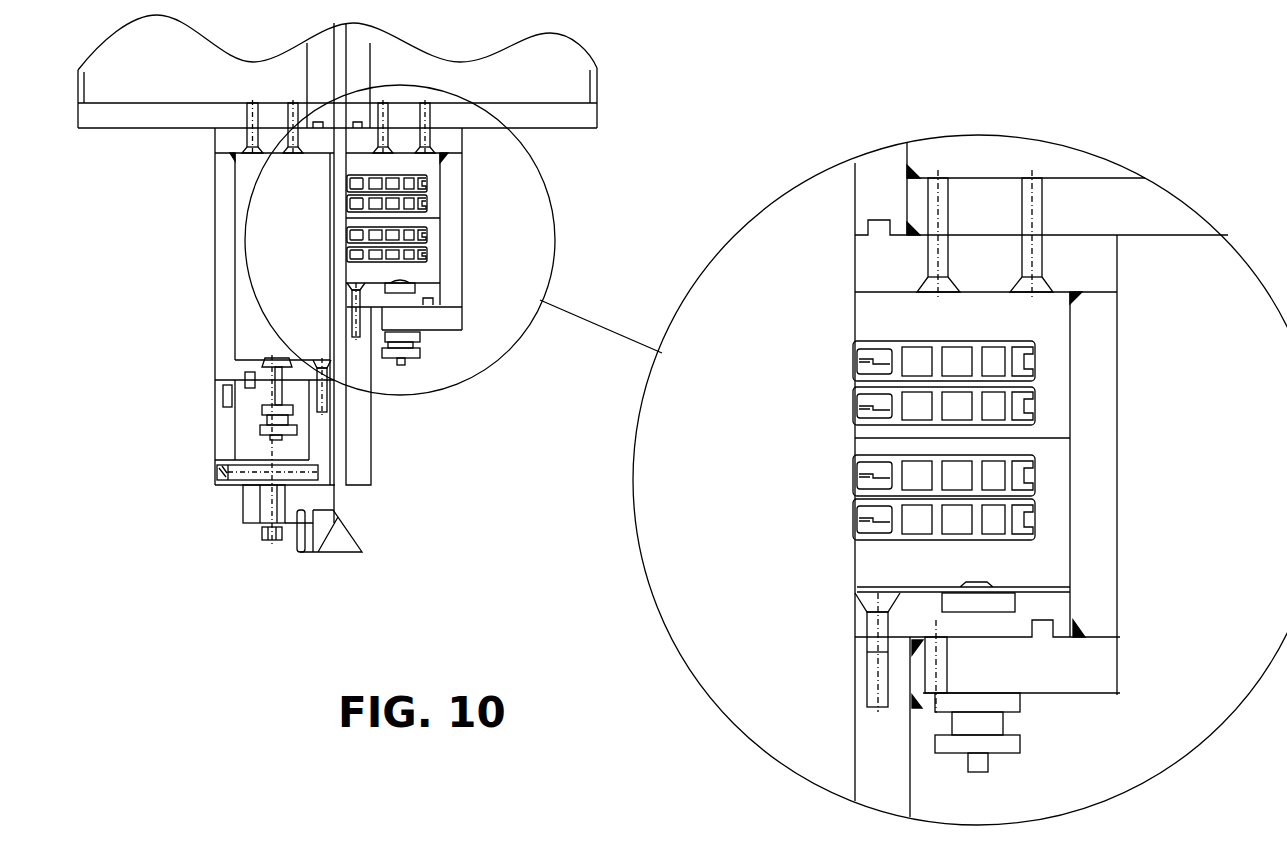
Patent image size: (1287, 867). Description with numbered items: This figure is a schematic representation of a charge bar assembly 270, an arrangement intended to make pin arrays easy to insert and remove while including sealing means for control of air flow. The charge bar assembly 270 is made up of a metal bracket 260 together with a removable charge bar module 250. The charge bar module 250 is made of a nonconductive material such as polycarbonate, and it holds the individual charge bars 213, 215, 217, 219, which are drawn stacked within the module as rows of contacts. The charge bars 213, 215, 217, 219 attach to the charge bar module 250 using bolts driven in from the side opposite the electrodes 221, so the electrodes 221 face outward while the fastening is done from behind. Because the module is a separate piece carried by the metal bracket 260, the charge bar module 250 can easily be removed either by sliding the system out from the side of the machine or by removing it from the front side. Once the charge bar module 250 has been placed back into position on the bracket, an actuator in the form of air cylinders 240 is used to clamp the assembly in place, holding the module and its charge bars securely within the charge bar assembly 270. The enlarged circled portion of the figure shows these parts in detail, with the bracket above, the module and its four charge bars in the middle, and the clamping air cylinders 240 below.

The charge bar assembly 270 is at (550, 182).
The metal bracket 260 is at (872, 182).
The charge bar module 250 is at (983, 315).
The electrodes 221 is at (850, 347).
The charge bar 213 is at (852, 373).
The charge bar 215 is at (852, 417).
The charge bar 217 is at (852, 485).
The charge bar 219 is at (852, 528).
The air cylinders 240 is at (940, 718).